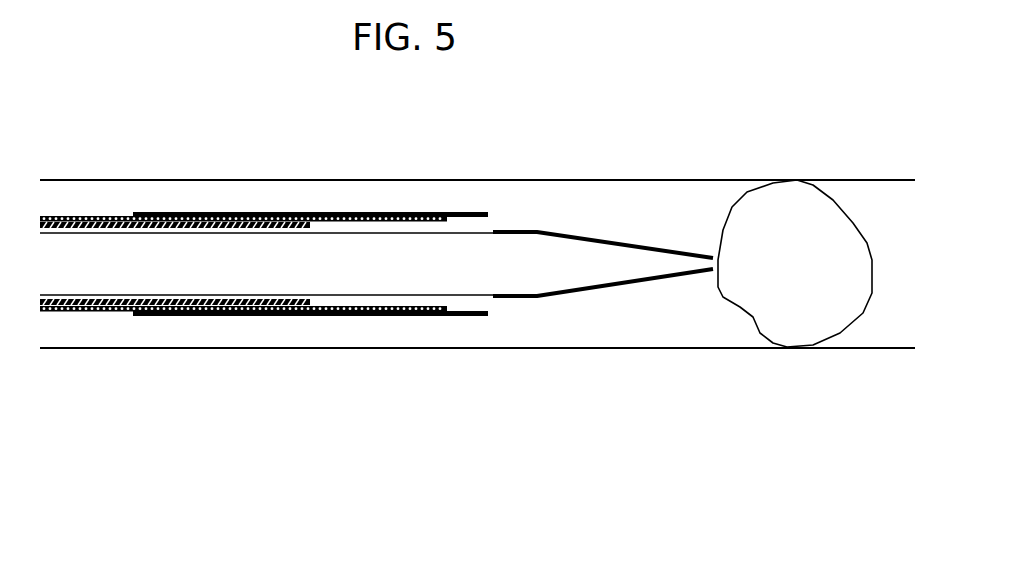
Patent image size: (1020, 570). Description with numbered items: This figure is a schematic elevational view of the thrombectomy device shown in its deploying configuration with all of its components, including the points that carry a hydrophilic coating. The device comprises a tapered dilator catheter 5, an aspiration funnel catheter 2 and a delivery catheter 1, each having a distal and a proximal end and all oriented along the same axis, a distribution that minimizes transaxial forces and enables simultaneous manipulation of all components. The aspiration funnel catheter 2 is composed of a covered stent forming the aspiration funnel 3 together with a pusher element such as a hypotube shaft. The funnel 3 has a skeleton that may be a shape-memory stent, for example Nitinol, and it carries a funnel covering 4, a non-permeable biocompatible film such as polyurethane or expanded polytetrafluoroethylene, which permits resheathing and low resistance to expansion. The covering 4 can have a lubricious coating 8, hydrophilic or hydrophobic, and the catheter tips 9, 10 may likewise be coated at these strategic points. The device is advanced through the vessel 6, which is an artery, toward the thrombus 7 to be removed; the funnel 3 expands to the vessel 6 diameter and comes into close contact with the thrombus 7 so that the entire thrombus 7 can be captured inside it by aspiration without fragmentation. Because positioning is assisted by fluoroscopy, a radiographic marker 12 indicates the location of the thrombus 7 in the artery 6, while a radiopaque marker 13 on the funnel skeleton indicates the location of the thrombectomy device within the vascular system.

The delivery catheter 1 is at (422, 213).
The aspiration funnel catheter 2 is at (137, 317).
The aspiration funnel 3 is at (297, 317).
The funnel covering 4 is at (245, 317).
The tapered dilator catheter 5 is at (333, 243).
The vessel 6 is at (642, 207).
The thrombus 7 is at (768, 293).
The lubricious coating 8 is at (248, 213).
The catheter tip 9 is at (405, 213).
The catheter tip 10 is at (552, 288).
The radiographic marker 12 is at (487, 213).
The radiopaque marker 13 is at (323, 317).